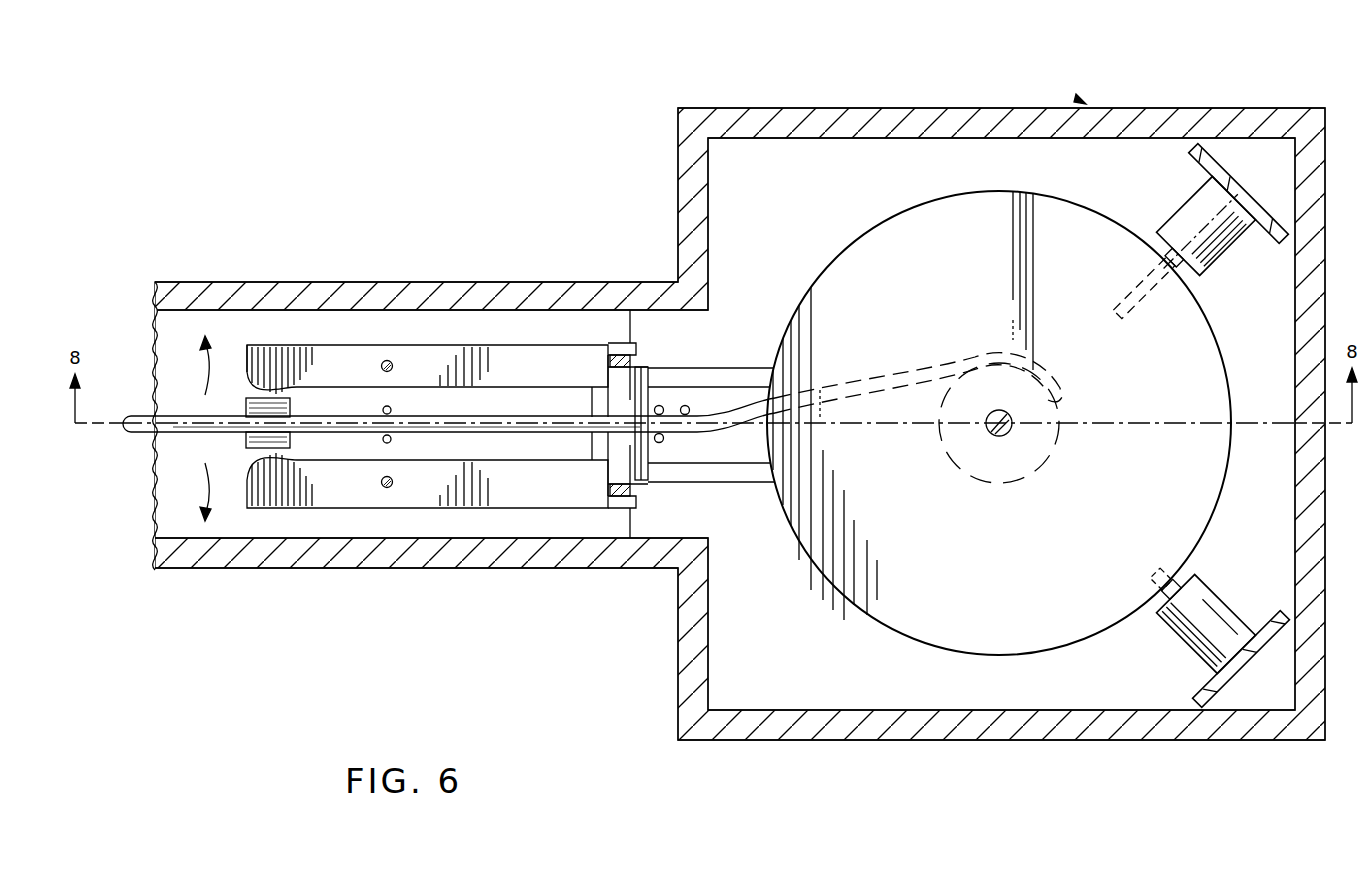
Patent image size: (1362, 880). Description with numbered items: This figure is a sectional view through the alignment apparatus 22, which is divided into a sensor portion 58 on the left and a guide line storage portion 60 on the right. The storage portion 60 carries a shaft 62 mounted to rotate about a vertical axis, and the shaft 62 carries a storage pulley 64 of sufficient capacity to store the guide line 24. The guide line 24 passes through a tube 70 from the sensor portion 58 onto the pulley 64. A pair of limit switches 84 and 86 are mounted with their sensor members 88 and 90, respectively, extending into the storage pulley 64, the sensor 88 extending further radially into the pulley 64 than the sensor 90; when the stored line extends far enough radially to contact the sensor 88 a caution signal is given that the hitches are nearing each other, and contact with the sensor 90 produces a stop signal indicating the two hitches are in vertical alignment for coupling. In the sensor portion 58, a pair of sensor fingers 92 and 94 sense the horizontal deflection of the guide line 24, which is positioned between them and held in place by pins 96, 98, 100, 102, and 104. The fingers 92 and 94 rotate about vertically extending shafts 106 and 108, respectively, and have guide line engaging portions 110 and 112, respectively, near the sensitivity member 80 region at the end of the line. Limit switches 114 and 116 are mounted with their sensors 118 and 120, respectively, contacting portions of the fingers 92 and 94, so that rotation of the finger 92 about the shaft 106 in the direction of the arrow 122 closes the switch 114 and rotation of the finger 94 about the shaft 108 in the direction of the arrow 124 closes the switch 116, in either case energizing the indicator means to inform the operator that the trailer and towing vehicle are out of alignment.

The alignment apparatus 22 is at (1112, 77).
The guide line 24 is at (138, 437).
The sensor portion 58 is at (363, 525).
The guide line storage portion 60 is at (950, 152).
The shaft 62 is at (1012, 428).
The storage pulley 64 is at (1122, 224).
The tube 70 is at (738, 368).
The sensitivity member 80 is at (250, 397).
The limit switch 84 is at (1228, 248).
The limit switch 86 is at (1230, 622).
The sensor member 88 is at (1145, 297).
The sensor member 90 is at (1170, 582).
The sensor finger 92 is at (578, 374).
The sensor finger 94 is at (570, 499).
The pin 96 is at (392, 410).
The pin 98 is at (392, 439).
The pin 100 is at (661, 406).
The pin 102 is at (686, 414).
The pin 104 is at (660, 442).
The shaft 106 is at (388, 360).
The shaft 108 is at (392, 485).
The guide line engaging portion 110 is at (265, 392).
The guide line engaging portion 112 is at (260, 452).
The limit switch 114 is at (636, 384).
The limit switch 116 is at (653, 478).
The sensor 118 is at (642, 355).
The sensor 120 is at (905, 423).
The arrow 122 is at (203, 362).
The arrow 124 is at (203, 490).